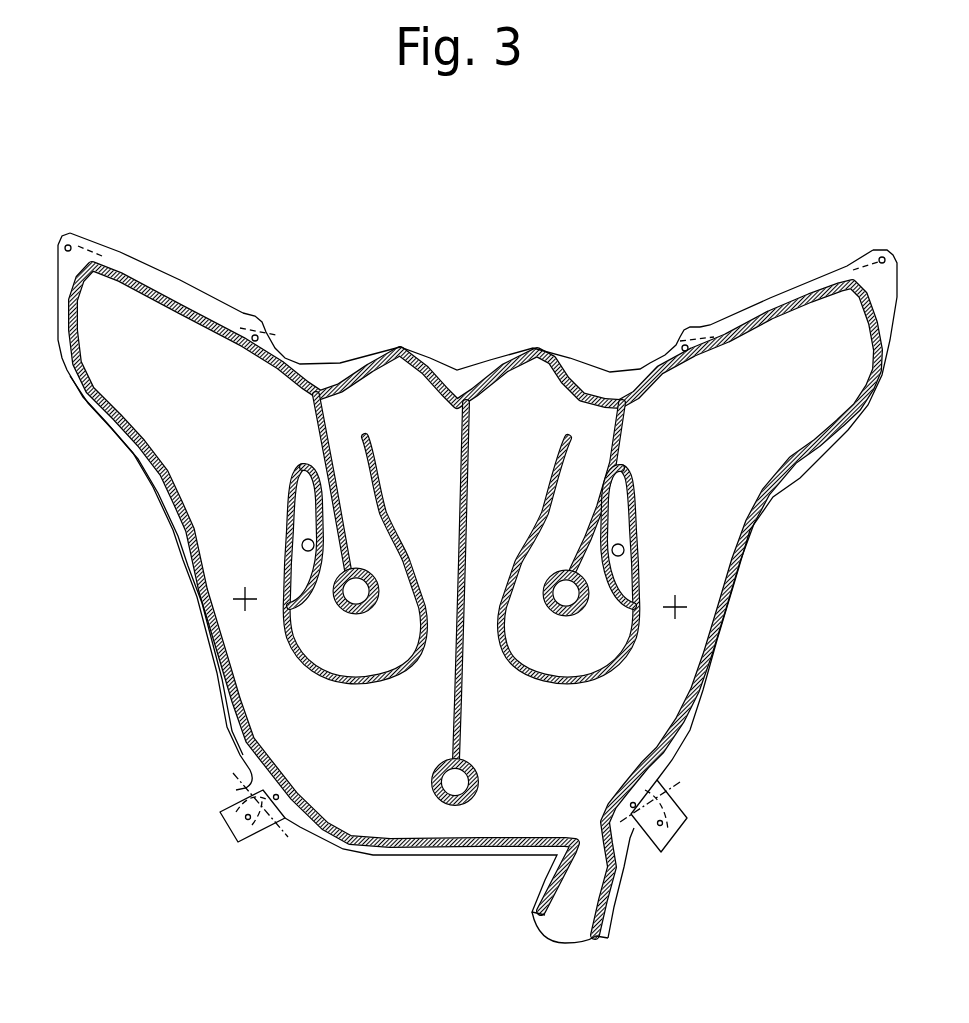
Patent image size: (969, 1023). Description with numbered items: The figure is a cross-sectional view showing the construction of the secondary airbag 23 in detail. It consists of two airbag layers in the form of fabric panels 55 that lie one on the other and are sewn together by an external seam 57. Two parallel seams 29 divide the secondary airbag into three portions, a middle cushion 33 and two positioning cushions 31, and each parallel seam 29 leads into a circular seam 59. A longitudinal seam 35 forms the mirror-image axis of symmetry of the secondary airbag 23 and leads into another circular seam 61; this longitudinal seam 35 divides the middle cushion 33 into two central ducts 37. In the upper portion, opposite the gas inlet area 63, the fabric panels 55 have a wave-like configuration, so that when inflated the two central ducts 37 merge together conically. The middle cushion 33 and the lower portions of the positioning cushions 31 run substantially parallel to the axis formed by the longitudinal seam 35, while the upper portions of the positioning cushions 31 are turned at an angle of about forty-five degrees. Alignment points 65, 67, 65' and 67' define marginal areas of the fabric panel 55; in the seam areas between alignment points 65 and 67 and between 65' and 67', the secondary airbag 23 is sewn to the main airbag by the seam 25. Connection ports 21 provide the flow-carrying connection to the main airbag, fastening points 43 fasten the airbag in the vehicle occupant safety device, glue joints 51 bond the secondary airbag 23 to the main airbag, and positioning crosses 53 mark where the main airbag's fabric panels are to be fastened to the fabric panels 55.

The connection port 21 is at (303, 533).
The secondary airbag 23 is at (215, 483).
The seam 25 is at (102, 262).
The parallel seam 29 is at (325, 432).
The positioning cushion 31 is at (190, 383).
The middle cushion 33 is at (520, 387).
The longitudinal seam 35 is at (462, 733).
The central duct 37 is at (508, 508).
The fastening point 43 is at (255, 827).
The glue joint 51 is at (377, 677).
The positioning cross 53 is at (240, 600).
The fabric panel 55 is at (213, 538).
The external seam 57 is at (137, 440).
The circular seam 59 is at (372, 594).
The circular seam 61 is at (430, 778).
The gas inlet area 63 is at (572, 920).
The alignment point 65 is at (57, 209).
The alignment point 65' is at (877, 206).
The alignment point 67 is at (264, 287).
The alignment point 67' is at (682, 300).